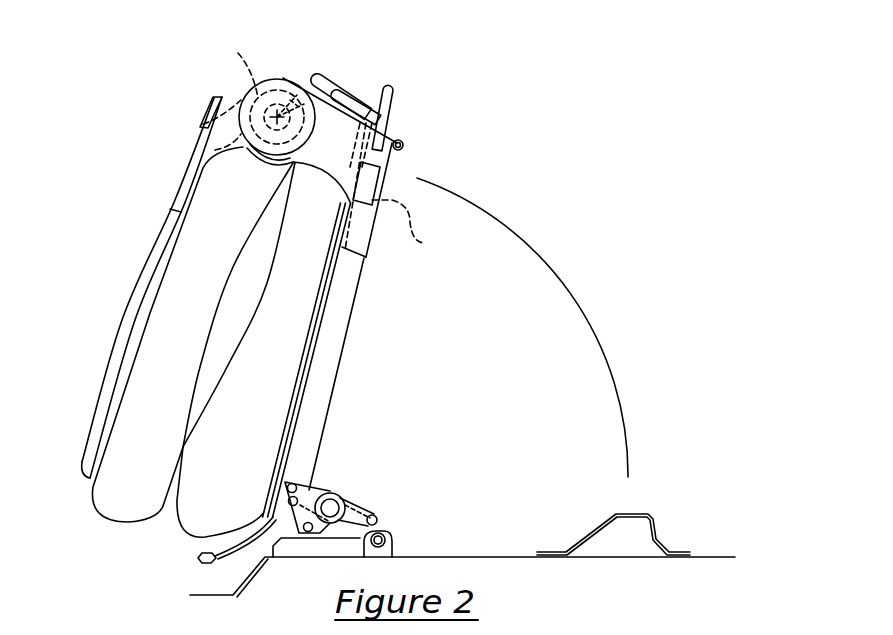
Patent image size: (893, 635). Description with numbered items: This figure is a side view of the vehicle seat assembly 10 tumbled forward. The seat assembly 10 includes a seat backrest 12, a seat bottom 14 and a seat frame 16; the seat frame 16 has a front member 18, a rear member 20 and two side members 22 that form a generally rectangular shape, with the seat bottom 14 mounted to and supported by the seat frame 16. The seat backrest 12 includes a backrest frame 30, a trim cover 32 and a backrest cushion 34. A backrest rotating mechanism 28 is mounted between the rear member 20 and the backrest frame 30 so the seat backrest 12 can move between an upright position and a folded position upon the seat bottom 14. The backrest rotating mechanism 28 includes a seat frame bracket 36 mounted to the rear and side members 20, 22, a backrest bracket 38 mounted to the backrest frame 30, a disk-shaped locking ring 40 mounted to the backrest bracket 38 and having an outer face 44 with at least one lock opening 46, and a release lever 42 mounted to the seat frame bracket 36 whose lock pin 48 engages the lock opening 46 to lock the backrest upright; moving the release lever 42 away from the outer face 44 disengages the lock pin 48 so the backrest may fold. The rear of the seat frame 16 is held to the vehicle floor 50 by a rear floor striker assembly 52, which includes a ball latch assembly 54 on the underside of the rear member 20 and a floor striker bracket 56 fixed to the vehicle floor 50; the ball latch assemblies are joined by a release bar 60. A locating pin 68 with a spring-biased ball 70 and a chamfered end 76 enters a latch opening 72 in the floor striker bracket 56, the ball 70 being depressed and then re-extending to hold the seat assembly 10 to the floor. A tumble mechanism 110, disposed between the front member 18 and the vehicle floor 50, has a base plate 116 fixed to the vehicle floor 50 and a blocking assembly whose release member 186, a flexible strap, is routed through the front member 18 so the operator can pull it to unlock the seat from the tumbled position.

The seat assembly 10 is at (552, 128).
The seat backrest 12 is at (157, 212).
The seat bottom 14 is at (165, 517).
The seat frame 16 is at (348, 352).
The front member 18 is at (226, 547).
The rear member 20 is at (425, 243).
The side members 22 is at (328, 405).
The backrest rotating mechanism 28 is at (332, 79).
The backrest frame 30 is at (142, 319).
The trim cover 32 is at (112, 354).
The backrest cushion 34 is at (183, 279).
The seat frame bracket 36 is at (370, 251).
The backrest bracket 38 is at (241, 104).
The locking ring 40 is at (203, 124).
The release lever 42 is at (302, 82).
The outer face 44 is at (215, 150).
The lock opening 46 is at (238, 53).
The lock pin 48 is at (288, 77).
The vehicle floor 50 is at (513, 560).
The rear floor striker assembly 52 is at (413, 147).
The ball latch assembly 54 is at (418, 180).
The floor striker bracket 56 is at (664, 546).
The release bar 60 is at (389, 86).
The locating pin 68 is at (403, 143).
The ball 70 is at (406, 138).
The latch opening 72 is at (632, 514).
The chamfered end 76 is at (398, 167).
The tumble mechanism 110 is at (352, 492).
The base plate 116 is at (392, 543).
The release member 186 is at (200, 559).